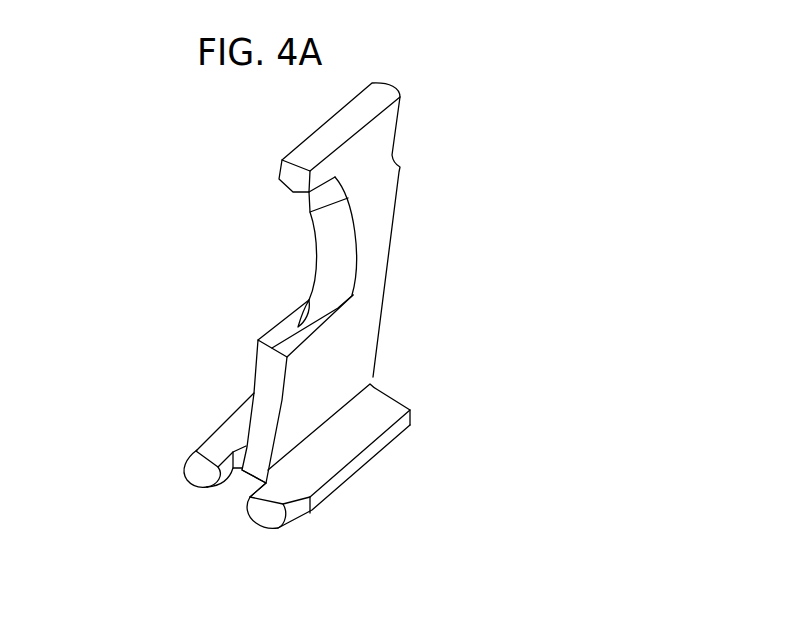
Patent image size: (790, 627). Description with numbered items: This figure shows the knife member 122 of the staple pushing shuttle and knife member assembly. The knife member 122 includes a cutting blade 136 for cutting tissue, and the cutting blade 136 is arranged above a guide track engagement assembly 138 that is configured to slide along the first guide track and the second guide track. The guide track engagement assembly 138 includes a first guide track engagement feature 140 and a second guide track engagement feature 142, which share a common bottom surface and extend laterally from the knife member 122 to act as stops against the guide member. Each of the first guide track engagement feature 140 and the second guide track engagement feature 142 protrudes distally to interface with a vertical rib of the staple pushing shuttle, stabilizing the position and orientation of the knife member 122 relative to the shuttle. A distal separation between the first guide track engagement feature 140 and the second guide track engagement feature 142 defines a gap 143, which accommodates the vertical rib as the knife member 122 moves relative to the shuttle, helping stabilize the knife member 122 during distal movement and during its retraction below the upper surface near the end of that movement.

The knife member 122 is at (243, 319).
The cutting blade 136 is at (315, 236).
The guide track engagement assembly 138 is at (171, 457).
The first guide track engagement feature 140 is at (332, 458).
The second guide track engagement feature 142 is at (238, 419).
The gap 143 is at (226, 496).